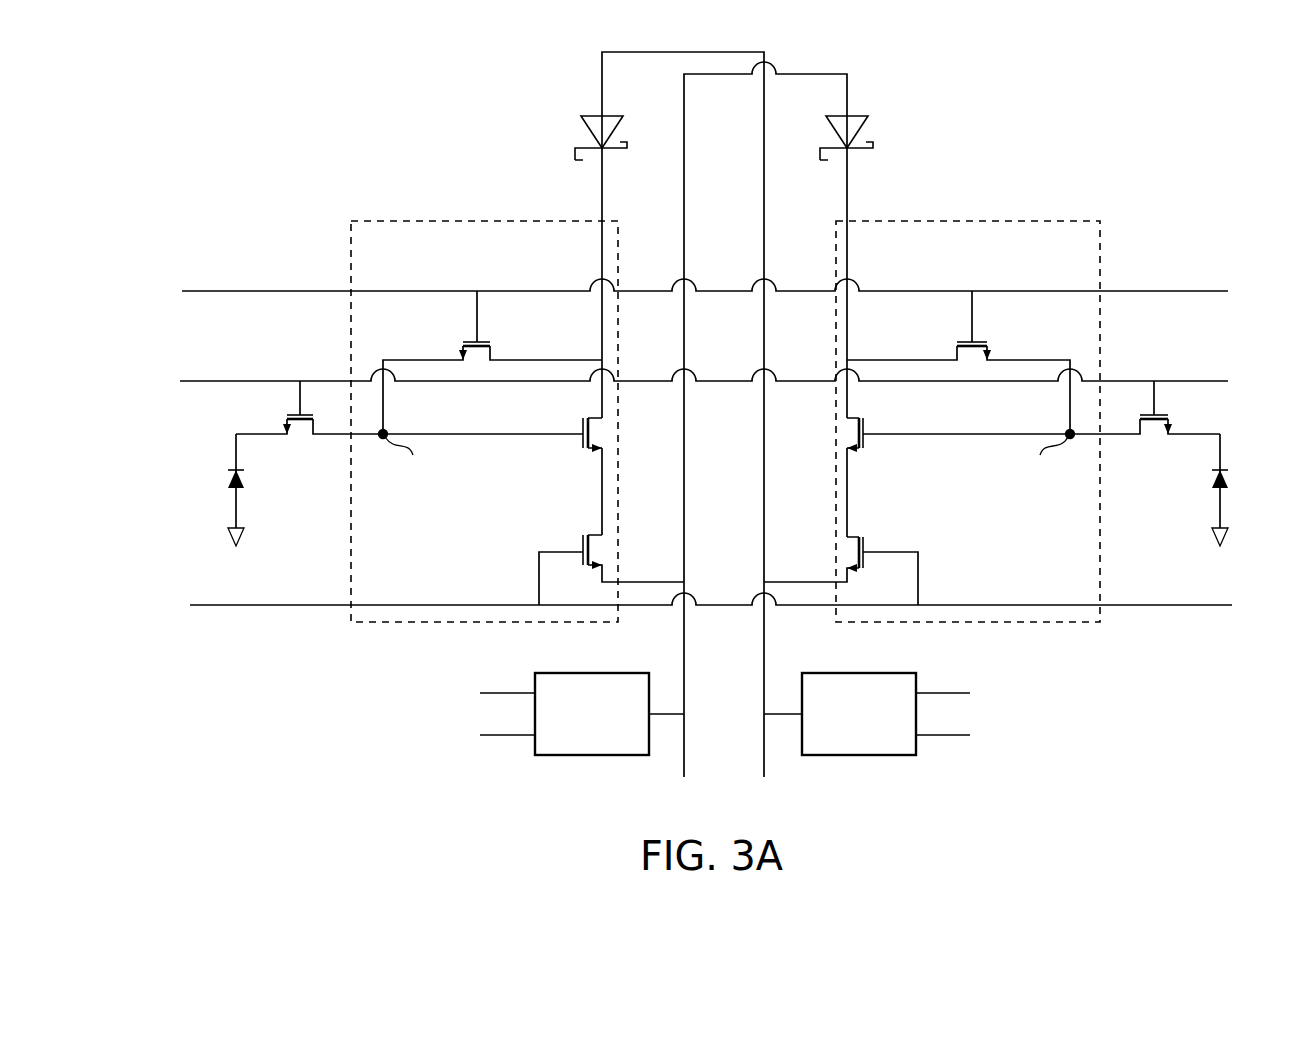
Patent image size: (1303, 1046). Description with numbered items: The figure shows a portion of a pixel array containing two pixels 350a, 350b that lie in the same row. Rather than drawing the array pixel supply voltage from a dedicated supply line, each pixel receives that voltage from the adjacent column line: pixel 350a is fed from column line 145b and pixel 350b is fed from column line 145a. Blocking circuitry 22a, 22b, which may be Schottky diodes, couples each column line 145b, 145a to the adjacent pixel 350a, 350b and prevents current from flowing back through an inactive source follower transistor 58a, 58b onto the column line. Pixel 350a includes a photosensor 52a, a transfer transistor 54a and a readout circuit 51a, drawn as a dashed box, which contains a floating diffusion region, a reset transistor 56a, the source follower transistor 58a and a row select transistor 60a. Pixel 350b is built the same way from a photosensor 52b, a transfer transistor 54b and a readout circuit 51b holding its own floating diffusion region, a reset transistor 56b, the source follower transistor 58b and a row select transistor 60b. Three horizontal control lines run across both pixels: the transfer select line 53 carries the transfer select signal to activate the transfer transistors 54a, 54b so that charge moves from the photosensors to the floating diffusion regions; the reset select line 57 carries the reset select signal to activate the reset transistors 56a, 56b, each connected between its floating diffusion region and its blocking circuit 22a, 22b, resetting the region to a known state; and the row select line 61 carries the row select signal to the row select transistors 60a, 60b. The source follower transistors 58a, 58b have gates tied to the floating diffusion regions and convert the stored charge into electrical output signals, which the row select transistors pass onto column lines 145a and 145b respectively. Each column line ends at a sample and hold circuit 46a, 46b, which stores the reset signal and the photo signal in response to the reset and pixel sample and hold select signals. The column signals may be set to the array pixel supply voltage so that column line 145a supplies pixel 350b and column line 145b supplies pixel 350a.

The pixel 350a is at (237, 135).
The pixel 350b is at (1193, 133).
The blocking circuit 22a is at (581, 116).
The blocking circuit 22b is at (868, 116).
The column line 145a is at (685, 226).
The column line 145b is at (764, 138).
The readout circuit 51a is at (440, 221).
The readout circuit 51b is at (1027, 221).
The reset select line 57 is at (272, 290).
The transfer select line 53 is at (268, 381).
The row select line 61 is at (283, 606).
The reset transistor 56a is at (463, 342).
The reset transistor 56b is at (987, 342).
The transfer transistor 54a is at (287, 415).
The transfer transistor 54b is at (1168, 415).
The source follower transistor 58a is at (583, 418).
The source follower transistor 58b is at (863, 418).
The row select transistor 60a is at (583, 535).
The row select transistor 60b is at (863, 537).
The photosensor 52a is at (228, 470).
The photosensor 52b is at (1228, 470).
The sample and hold circuit 46a is at (605, 724).
The sample and hold circuit 46b is at (878, 724).